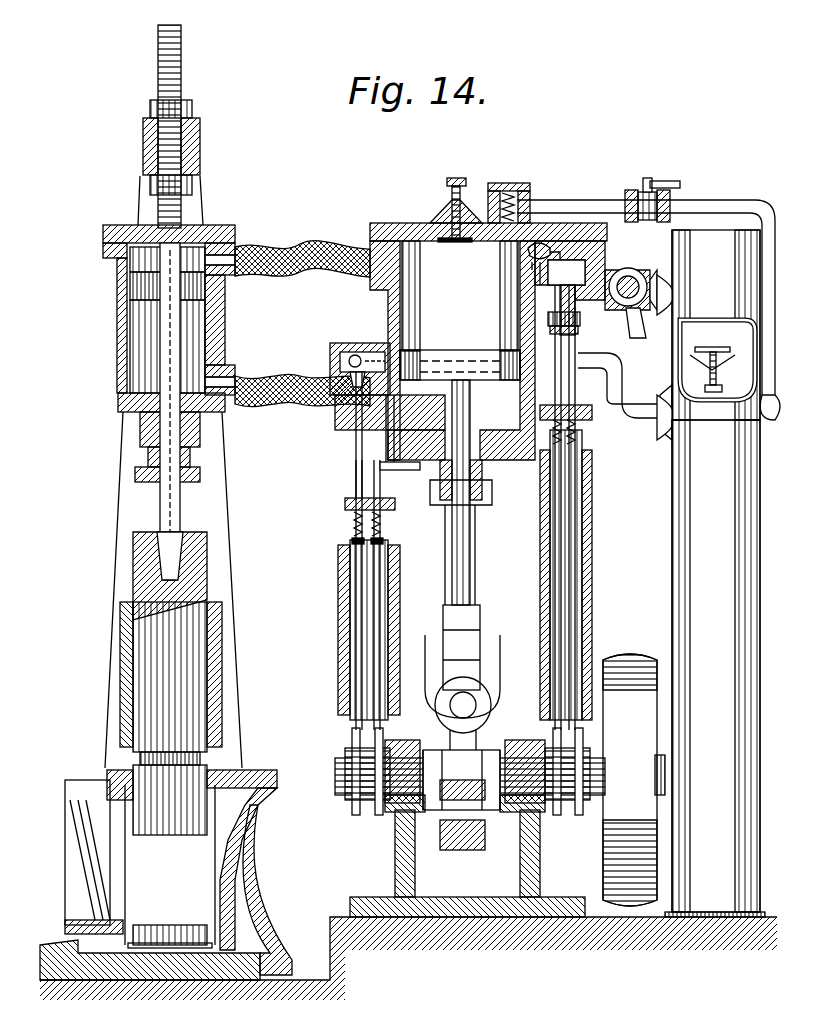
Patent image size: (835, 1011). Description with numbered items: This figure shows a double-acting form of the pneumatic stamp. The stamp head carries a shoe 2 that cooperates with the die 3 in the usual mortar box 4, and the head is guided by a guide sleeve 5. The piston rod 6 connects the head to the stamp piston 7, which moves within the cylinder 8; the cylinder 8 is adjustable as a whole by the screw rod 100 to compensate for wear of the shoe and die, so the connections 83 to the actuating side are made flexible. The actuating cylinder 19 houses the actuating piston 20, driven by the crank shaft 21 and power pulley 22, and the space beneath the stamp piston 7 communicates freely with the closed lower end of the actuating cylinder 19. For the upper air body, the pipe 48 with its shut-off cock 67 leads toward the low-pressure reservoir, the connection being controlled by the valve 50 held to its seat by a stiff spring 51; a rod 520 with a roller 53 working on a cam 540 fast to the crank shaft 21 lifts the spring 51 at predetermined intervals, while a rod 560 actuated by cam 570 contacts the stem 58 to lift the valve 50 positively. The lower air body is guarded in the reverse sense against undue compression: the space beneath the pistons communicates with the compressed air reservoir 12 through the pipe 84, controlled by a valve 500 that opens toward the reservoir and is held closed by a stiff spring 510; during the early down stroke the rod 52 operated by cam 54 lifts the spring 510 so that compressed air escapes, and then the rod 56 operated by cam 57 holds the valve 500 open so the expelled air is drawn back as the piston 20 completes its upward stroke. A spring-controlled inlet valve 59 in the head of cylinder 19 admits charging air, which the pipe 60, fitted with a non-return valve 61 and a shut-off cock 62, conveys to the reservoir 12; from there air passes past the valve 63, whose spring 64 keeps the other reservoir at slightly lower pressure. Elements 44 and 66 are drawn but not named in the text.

The screw rod 100 is at (190, 210).
The cylinder 8 is at (118, 312).
The piston 7 is at (220, 290).
The piston rod 6 is at (178, 508).
The connections 83 is at (322, 258).
The guide sleeve 5 is at (222, 608).
The shoe 2 is at (170, 800).
The mortar box 4 is at (199, 872).
The die 3 is at (160, 930).
The actuating cylinder 19 is at (390, 290).
The actuating piston 20 is at (432, 358).
The roller 53 is at (490, 710).
The crank shaft 21 is at (500, 775).
The cam 57 is at (352, 805).
The cam 54 is at (375, 810).
The cam 540 is at (557, 812).
The cam 570 is at (578, 803).
The rod 56 is at (345, 582).
The rod 52 is at (380, 618).
The valve 500 is at (340, 362).
The spring 510 is at (380, 412).
The pipe 84 is at (362, 343).
The rod 520 is at (570, 527).
The rod 560 is at (570, 598).
The stem 58 is at (572, 345).
The inlet valve 59 is at (456, 240).
The non-return valve 61 is at (522, 184).
The pipe 60 is at (535, 210).
The shut-off cock 62 is at (662, 183).
The spring 64 is at (770, 405).
The spring 51 is at (528, 252).
The valve 50 is at (606, 256).
The pipe 48 is at (624, 275).
The shut-off cock 67 is at (625, 312).
The pressure cylinder 44 is at (715, 248).
The diaphragm 66 is at (692, 355).
The valve 63 is at (705, 346).
The compressed air reservoir 12 is at (752, 512).
The power pulley 22 is at (630, 730).